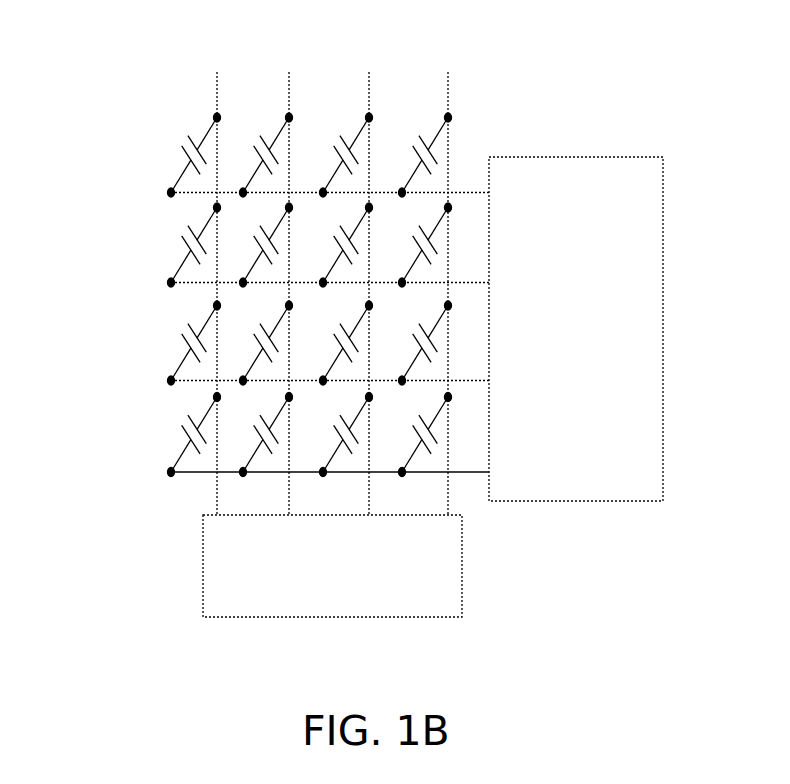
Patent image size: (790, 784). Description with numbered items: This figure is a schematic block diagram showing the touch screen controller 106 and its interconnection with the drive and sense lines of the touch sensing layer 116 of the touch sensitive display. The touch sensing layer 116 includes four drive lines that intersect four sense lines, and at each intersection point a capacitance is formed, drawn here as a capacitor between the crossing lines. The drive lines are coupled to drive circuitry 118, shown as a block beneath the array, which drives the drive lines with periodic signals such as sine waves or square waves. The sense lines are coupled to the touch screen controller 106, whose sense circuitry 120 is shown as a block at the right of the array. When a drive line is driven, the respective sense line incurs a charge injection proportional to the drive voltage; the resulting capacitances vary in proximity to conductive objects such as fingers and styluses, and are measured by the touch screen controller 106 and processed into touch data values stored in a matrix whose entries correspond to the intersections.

The touch screen controller 106 is at (541, 571).
The touch sensing layer 116 is at (119, 84).
The drive circuitry 118 is at (270, 617).
The sense circuitry 120 is at (667, 273).